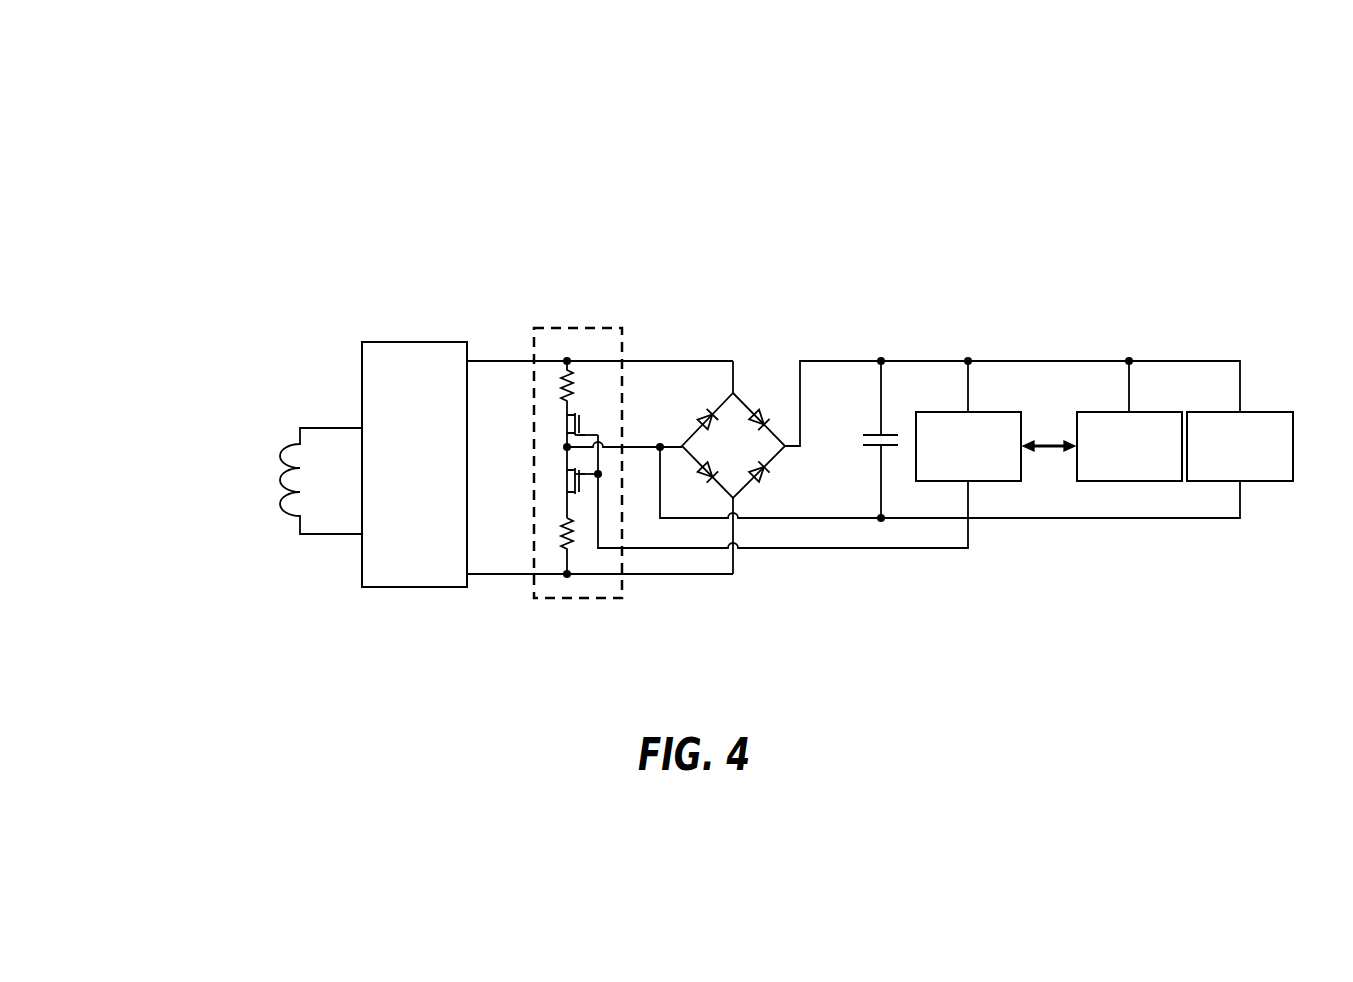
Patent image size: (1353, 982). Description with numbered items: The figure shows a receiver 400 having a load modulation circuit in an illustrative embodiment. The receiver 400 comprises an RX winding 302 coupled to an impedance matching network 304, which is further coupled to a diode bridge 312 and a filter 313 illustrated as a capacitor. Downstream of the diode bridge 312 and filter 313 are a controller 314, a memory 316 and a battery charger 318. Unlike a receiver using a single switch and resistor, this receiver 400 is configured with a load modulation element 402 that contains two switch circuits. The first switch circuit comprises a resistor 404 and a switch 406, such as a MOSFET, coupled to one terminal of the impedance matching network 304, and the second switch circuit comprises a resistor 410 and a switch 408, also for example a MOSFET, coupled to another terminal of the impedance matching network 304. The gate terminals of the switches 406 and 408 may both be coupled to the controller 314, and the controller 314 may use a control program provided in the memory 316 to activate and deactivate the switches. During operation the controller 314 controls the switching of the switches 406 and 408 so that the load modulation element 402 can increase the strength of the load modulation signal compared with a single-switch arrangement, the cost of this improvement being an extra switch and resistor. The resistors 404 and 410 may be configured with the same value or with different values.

The receiver 400 is at (1019, 211).
The RX winding 302 is at (260, 482).
The impedance matching network 304 is at (414, 464).
The load modulation element 402 is at (559, 430).
The resistor 404 is at (588, 368).
The switch 406 is at (546, 410).
The switch 408 is at (547, 495).
The resistor 410 is at (558, 551).
The diode bridge 312 is at (748, 379).
The filter 313 is at (890, 416).
The controller 314 is at (985, 393).
The memory 316 is at (1162, 393).
The battery charger 318 is at (1279, 393).